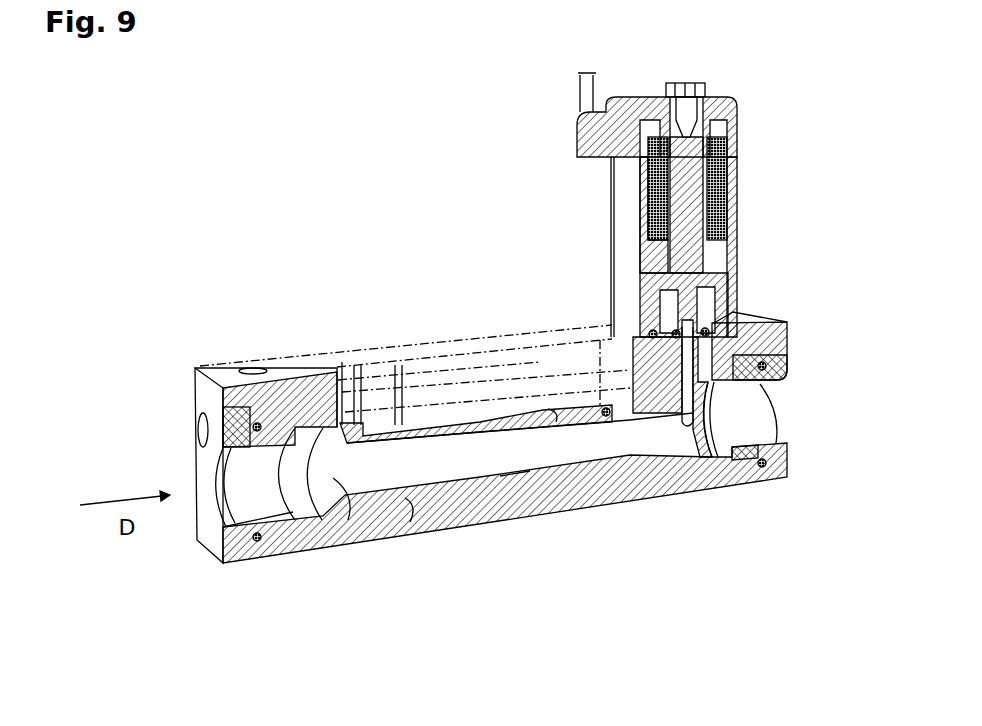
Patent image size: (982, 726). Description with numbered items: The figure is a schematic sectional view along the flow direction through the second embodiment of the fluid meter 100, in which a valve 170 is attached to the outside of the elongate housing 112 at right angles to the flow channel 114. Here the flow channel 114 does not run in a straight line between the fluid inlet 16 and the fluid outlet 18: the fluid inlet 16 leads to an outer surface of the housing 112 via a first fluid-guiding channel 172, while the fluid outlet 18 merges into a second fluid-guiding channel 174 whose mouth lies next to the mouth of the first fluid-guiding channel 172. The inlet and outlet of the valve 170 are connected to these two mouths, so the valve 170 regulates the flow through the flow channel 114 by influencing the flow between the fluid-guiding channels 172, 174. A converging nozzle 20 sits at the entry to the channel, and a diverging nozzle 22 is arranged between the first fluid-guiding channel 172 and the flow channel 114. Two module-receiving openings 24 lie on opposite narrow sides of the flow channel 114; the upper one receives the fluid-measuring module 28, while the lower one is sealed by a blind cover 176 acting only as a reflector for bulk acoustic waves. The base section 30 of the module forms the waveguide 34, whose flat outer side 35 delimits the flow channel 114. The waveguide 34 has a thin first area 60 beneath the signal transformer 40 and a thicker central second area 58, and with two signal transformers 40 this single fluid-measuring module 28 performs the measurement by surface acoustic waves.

The fluid meter 100 is at (150, 208).
The elongate housing 112 is at (221, 367).
The fluid inlet 16 is at (232, 482).
The converging nozzle 20 is at (353, 512).
The module-receiving opening 24 is at (343, 520).
The first area 60 is at (412, 506).
The blind cover 176 is at (487, 507).
The second area 58 is at (512, 500).
The waveguide 34 is at (567, 424).
The flow channel 114 is at (597, 440).
The fluid-measuring module 28 is at (448, 398).
The signal transformer 40 is at (358, 427).
The base section 30 is at (398, 430).
The outer side 35 is at (476, 421).
The diverging nozzle 22 is at (623, 428).
The fluid outlet 18 is at (745, 420).
The first fluid-guiding channel 172 is at (788, 368).
The second fluid-guiding channel 174 is at (790, 328).
The valve 170 is at (741, 145).